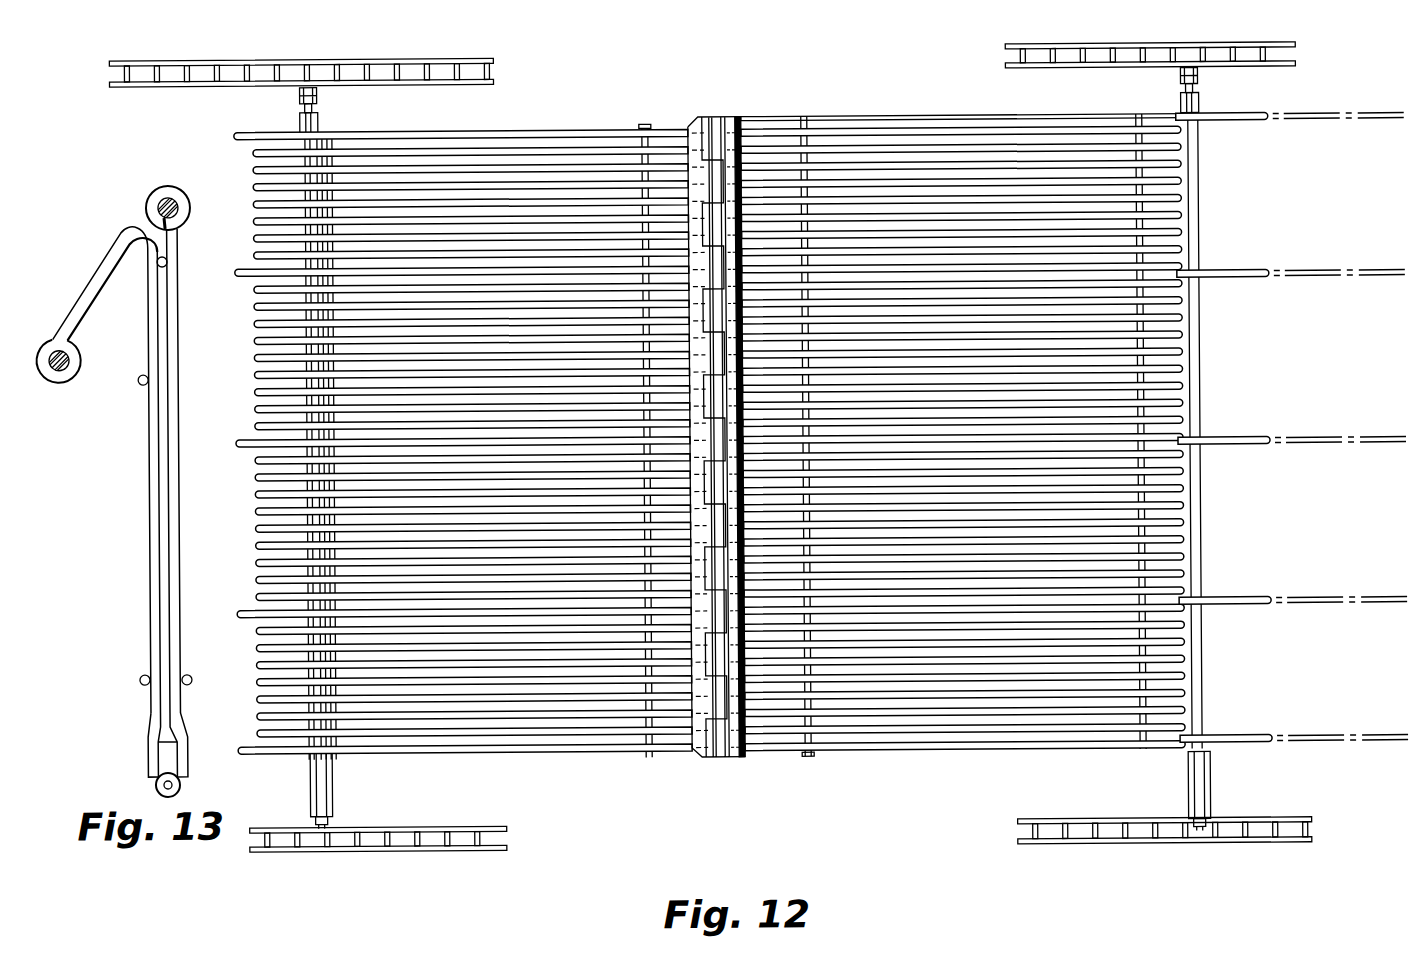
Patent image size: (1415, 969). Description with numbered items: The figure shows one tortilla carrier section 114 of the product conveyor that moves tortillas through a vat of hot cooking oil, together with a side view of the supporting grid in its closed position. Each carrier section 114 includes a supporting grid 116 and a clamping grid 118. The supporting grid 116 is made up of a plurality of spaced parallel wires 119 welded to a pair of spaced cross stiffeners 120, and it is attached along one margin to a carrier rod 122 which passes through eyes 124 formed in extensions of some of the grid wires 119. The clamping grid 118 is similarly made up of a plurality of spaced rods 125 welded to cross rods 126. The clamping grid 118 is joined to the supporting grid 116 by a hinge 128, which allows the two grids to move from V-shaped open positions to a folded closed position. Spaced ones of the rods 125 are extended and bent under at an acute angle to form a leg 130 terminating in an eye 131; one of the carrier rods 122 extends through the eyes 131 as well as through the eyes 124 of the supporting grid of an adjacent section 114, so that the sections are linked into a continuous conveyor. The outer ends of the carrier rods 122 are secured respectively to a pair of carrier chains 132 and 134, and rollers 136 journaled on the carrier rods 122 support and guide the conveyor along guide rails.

In FIG. 12, the tortilla carrier section 114 is at (831, 116).
In FIG. 12, the supporting grid 116 is at (1066, 674).
In FIG. 13, the supporting grid 116 is at (173, 428).
In FIG. 12, the clamping grid 118 is at (587, 718).
In FIG. 13, the clamping grid 118 is at (157, 518).
In FIG. 12, the grid wires 119 is at (915, 742).
In FIG. 12, the cross stiffeners 120 is at (808, 757).
In FIG. 13, the cross stiffeners 120 is at (169, 262).
In FIG. 12, the carrier rod 122 is at (1201, 522).
In FIG. 13, the carrier rod 122 is at (185, 172).
In FIG. 12, the eyes 124 is at (1207, 117).
In FIG. 13, the eyes 124 is at (184, 204).
In FIG. 12, the rods 125 is at (490, 738).
In FIG. 12, the cross rods 126 is at (336, 755).
In FIG. 12, the hinge 128 is at (718, 758).
In FIG. 13, the hinge 128 is at (178, 787).
In FIG. 13, the leg 130 is at (106, 265).
In FIG. 13, the eye 131 is at (73, 345).
In FIG. 12, the carrier chain 132 is at (457, 84).
In FIG. 12, the carrier chain 134 is at (505, 826).
In FIG. 12, the rollers 136 is at (321, 124).